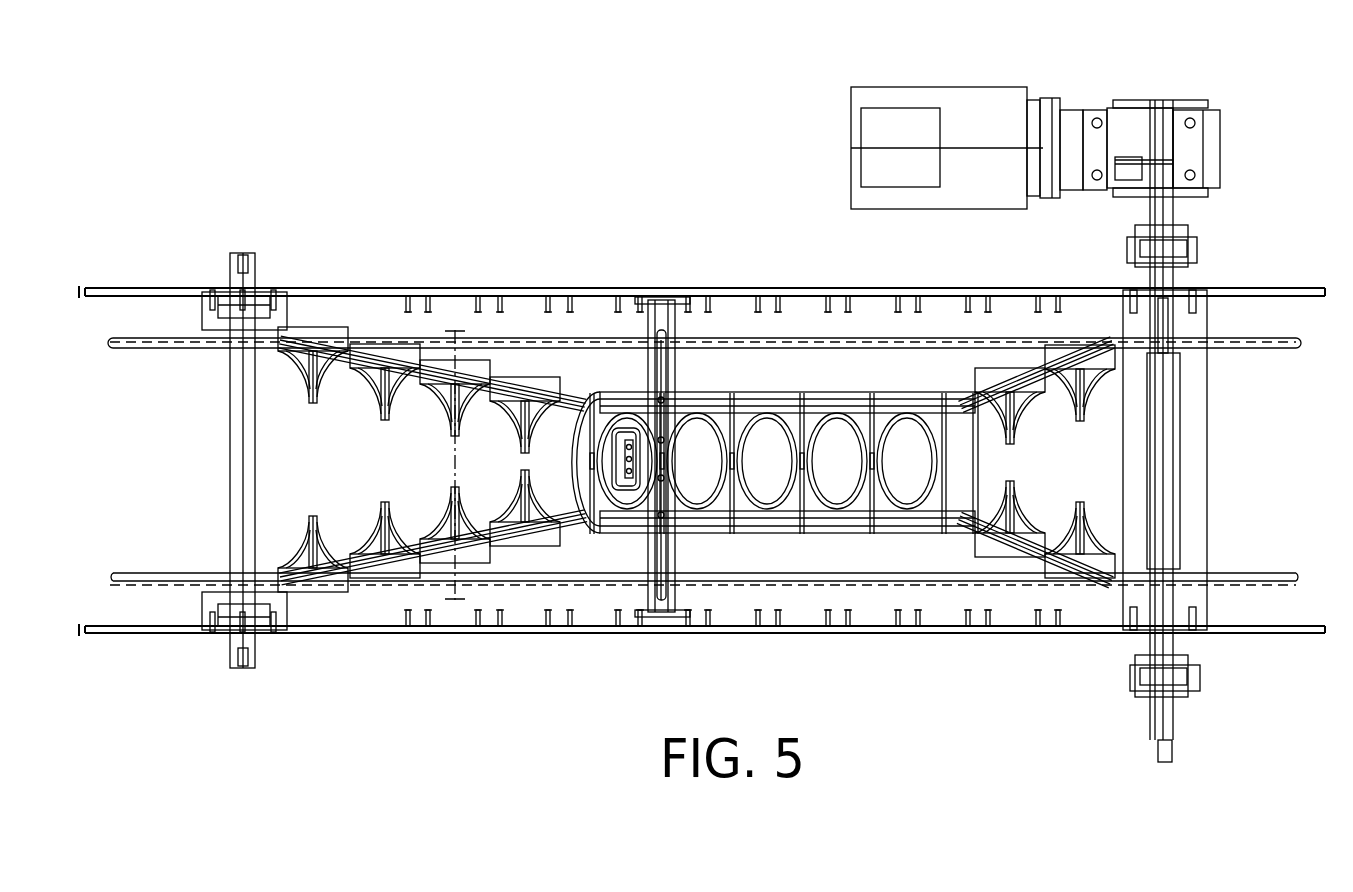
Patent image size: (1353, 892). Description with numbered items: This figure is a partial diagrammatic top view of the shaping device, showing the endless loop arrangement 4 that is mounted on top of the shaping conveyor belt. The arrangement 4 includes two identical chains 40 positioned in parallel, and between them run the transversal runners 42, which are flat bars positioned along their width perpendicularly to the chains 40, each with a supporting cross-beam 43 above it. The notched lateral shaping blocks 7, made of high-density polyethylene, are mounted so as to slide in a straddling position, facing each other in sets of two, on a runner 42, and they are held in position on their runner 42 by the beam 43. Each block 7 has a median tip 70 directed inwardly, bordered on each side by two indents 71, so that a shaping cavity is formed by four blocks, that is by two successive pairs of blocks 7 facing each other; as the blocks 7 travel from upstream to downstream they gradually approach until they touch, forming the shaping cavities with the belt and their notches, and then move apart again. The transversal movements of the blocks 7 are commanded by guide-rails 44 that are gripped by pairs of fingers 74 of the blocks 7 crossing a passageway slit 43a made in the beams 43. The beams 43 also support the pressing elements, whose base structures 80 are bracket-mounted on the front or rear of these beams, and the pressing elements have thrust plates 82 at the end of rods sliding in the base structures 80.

The endless loop arrangement 4 is at (251, 193).
The lateral shaping block 7 is at (380, 527).
The chain 40 is at (375, 290).
The transversal runner 42 is at (455, 466).
The supporting cross-beam 43 is at (661, 457).
The passageway slit 43a is at (655, 572).
The guide-rail 44 is at (885, 394).
The median tip 70 is at (1082, 396).
The indent 71 is at (1100, 540).
The finger 74 is at (680, 518).
The base structure 80 is at (589, 463).
The thrust plate 82 is at (615, 458).